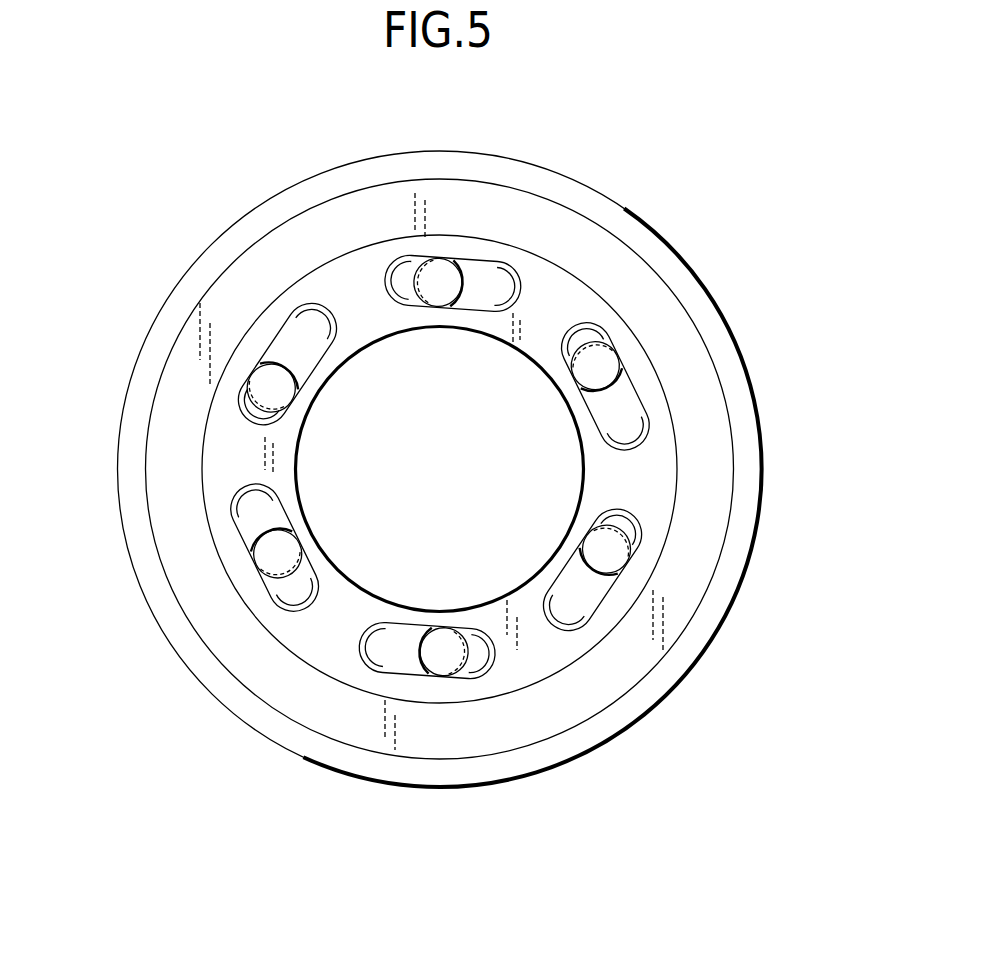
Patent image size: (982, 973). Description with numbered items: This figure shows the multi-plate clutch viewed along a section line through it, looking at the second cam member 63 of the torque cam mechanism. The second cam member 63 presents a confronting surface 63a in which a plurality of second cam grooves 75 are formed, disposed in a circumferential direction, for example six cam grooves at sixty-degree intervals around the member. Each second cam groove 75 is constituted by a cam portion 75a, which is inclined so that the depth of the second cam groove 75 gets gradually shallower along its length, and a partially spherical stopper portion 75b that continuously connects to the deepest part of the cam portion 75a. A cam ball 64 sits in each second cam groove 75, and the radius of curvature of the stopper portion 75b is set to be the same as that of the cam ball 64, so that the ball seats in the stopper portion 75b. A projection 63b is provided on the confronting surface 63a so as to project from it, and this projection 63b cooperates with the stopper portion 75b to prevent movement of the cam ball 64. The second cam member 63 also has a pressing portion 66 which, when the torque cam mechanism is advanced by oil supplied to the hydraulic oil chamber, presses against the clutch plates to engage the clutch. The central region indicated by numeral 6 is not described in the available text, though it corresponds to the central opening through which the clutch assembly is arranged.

The hub / shaft 6 is at (427, 352).
The second cam member 63 is at (575, 160).
The confronting surface 63a is at (345, 268).
The projection 63b is at (305, 323).
The cam ball 64 is at (395, 265).
The pressing portion 66 is at (657, 642).
The second cam groove 75 is at (430, 543).
The cam portion 75a is at (255, 378).
The stopper portion 75b is at (265, 350).